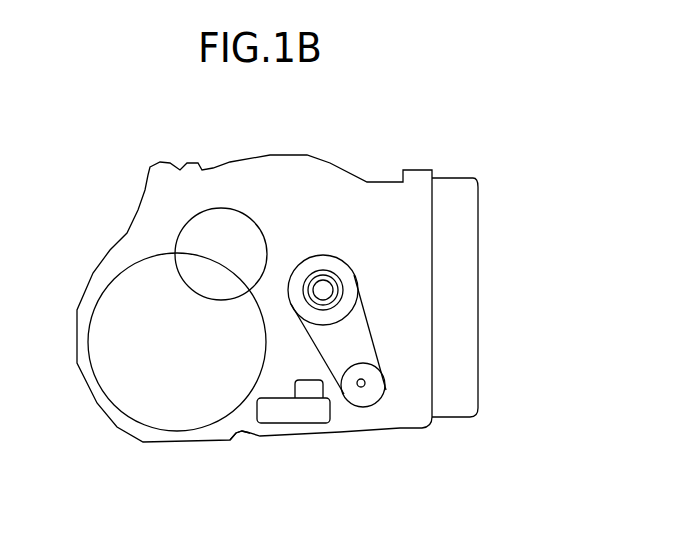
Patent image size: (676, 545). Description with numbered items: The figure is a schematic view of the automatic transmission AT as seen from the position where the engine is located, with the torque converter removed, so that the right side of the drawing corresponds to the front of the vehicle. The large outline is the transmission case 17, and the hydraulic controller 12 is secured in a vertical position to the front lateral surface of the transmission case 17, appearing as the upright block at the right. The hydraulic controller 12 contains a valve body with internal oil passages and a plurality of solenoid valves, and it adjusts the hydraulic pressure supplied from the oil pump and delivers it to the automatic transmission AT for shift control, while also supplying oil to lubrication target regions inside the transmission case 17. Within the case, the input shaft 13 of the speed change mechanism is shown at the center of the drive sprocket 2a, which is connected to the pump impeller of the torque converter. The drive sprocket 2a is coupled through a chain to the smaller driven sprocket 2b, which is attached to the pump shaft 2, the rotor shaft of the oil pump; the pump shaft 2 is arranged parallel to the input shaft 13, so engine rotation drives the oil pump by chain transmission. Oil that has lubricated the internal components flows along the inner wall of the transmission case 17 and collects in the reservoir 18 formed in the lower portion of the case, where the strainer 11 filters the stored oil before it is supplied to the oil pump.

The automatic transmission AT is at (140, 168).
The transmission case 17 is at (108, 252).
The hydraulic controller 12 is at (478, 185).
The strainer 11 is at (300, 410).
The pump shaft 2 is at (360, 388).
The drive sprocket 2a is at (316, 256).
The driven sprocket 2b is at (368, 393).
The input shaft 13 is at (328, 286).
The reservoir 18 is at (240, 433).